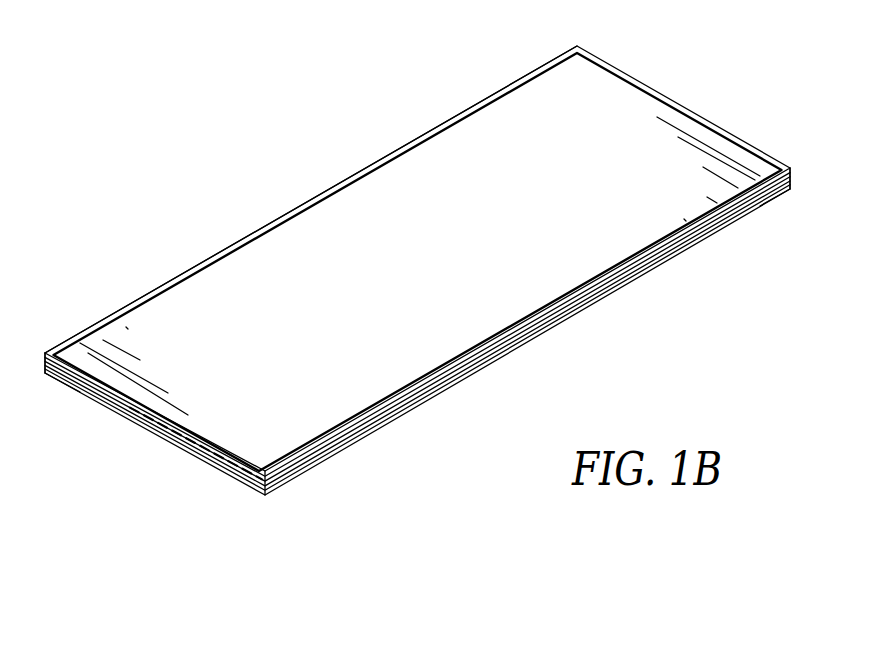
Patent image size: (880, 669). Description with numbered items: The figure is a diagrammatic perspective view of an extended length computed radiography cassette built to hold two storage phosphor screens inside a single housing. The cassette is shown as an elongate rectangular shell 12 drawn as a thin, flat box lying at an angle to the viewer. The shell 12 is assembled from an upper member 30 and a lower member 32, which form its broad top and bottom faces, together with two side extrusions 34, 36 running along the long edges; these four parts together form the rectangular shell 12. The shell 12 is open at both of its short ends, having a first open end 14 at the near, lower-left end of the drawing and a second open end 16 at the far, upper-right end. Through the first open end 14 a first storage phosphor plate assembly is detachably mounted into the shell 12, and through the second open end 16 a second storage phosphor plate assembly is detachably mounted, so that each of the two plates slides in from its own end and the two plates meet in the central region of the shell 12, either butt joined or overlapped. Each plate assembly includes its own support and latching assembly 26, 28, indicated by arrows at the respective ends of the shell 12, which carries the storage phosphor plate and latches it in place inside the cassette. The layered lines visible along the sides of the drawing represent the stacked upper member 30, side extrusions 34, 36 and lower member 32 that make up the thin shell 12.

The elongate rectangular shell 12 is at (497, 107).
The first open end 14 is at (230, 448).
The second open end 16 is at (625, 82).
The support and latching assembly 26 is at (116, 445).
The support and latching assembly 28 is at (696, 98).
The upper member 30 is at (379, 183).
The lower member 32 is at (377, 428).
The side extrusion 34 is at (530, 335).
The side extrusion 36 is at (252, 233).